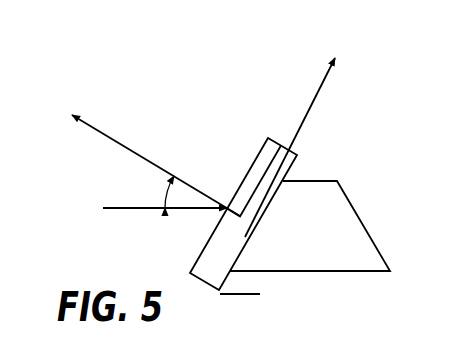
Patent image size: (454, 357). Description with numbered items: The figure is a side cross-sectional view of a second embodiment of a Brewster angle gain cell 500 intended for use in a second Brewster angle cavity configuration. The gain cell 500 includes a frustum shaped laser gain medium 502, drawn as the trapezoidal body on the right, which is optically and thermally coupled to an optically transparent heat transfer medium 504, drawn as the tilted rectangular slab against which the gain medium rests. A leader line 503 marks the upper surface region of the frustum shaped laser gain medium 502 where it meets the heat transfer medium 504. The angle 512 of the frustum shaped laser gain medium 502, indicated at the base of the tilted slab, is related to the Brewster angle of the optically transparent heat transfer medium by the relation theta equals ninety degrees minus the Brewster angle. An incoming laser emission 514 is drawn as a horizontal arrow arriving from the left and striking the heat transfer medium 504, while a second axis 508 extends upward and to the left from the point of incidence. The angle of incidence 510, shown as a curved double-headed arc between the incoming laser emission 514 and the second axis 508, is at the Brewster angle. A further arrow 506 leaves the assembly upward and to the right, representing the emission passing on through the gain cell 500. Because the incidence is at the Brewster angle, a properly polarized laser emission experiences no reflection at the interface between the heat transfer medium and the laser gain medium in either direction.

The gain cell 500 is at (352, 95).
The frustum shaped laser gain medium 502 is at (338, 180).
The top surface of prism 503 is at (314, 180).
The optically transparent heat transfer medium 504 is at (279, 139).
The transmitted beam 506 is at (298, 137).
The second axis 508 is at (140, 154).
The angle of incidence 510 is at (172, 194).
The angle of the frustum shaped laser gain medium 512 is at (253, 282).
The incoming laser emission 514 is at (123, 208).